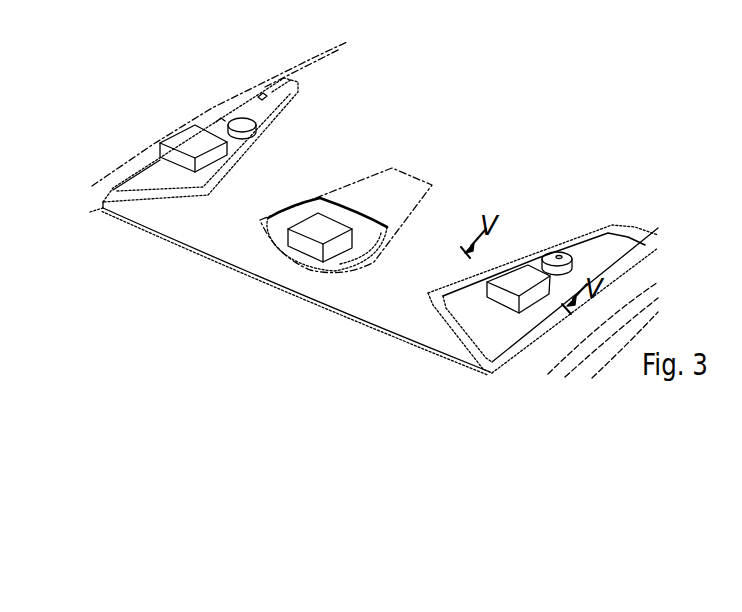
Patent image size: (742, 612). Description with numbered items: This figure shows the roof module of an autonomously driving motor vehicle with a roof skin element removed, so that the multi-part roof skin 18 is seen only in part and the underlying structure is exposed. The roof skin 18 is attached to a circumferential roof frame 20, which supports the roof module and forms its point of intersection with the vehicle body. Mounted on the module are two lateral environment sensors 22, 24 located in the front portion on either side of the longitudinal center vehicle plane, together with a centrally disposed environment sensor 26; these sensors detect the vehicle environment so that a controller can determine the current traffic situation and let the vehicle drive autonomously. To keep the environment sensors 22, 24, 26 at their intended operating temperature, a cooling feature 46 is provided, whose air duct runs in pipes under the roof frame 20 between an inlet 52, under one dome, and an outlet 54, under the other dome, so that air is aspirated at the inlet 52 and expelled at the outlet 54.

The roof skin 18 is at (489, 141).
The roof frame 20 is at (499, 324).
The lateral environment sensor 22 is at (186, 137).
The lateral environment sensor 24 is at (529, 300).
The central environment sensor 26 is at (303, 246).
The cooling feature 46 is at (558, 258).
The inlet 52 is at (547, 252).
The outlet 54 is at (237, 118).